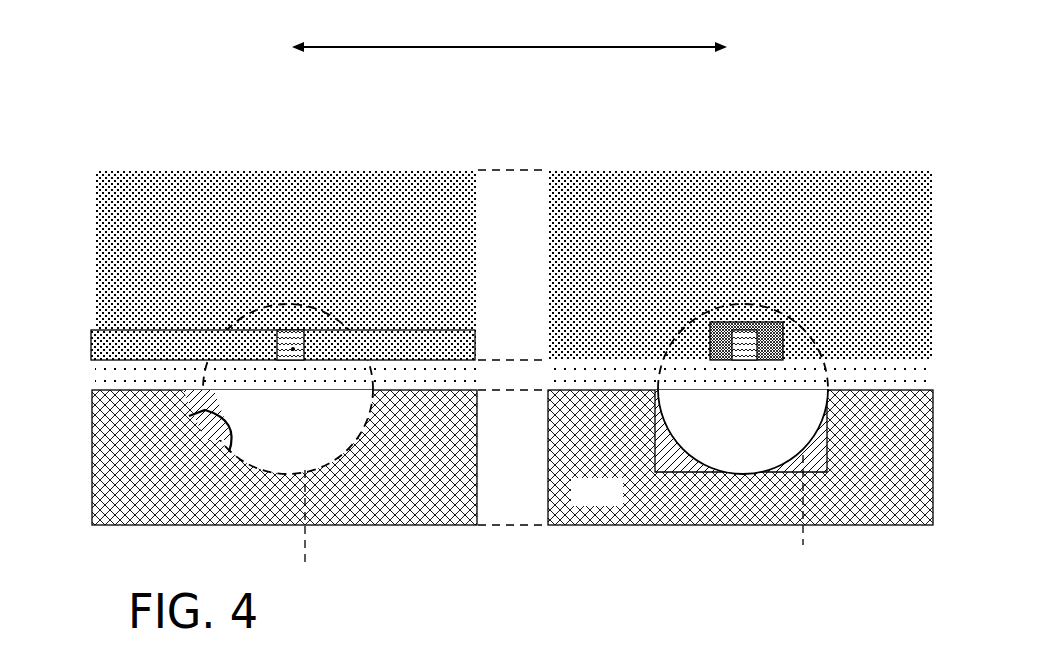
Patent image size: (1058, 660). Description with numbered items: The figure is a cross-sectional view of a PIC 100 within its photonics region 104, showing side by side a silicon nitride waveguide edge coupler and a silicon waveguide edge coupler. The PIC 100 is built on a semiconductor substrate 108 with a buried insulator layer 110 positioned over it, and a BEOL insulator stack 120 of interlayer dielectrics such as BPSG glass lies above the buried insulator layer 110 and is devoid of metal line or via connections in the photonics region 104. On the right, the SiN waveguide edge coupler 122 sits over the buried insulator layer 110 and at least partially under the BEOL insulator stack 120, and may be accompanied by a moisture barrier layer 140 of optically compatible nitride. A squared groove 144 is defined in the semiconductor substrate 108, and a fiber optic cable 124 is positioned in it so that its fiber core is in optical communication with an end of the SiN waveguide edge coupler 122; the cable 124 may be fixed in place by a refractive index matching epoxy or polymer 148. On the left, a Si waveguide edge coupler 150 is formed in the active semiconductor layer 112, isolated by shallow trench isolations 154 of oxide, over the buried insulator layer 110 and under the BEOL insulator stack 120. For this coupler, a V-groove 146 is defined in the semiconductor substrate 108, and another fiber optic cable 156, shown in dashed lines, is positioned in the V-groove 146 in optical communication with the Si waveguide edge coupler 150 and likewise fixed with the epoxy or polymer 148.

The PIC 100 is at (597, 162).
The photonics region 104 is at (509, 30).
The semiconductor substrate 108 is at (617, 502).
The buried insulator layer 110 is at (887, 370).
The active semiconductor layer 112 is at (293, 350).
The BEOL insulator stack 120 is at (155, 212).
The SiN waveguide edge coupler 122 is at (750, 324).
The fiber optic cable 124 is at (794, 512).
The moisture barrier layer 140 is at (712, 322).
The squared groove 144 is at (657, 455).
The V-groove 146 is at (229, 452).
The refractive index matching epoxy or polymer 148 is at (387, 407).
The Si waveguide edge coupler 150 is at (293, 347).
The shallow trench isolations 154 is at (130, 347).
The fiber optic cable 156 is at (297, 531).